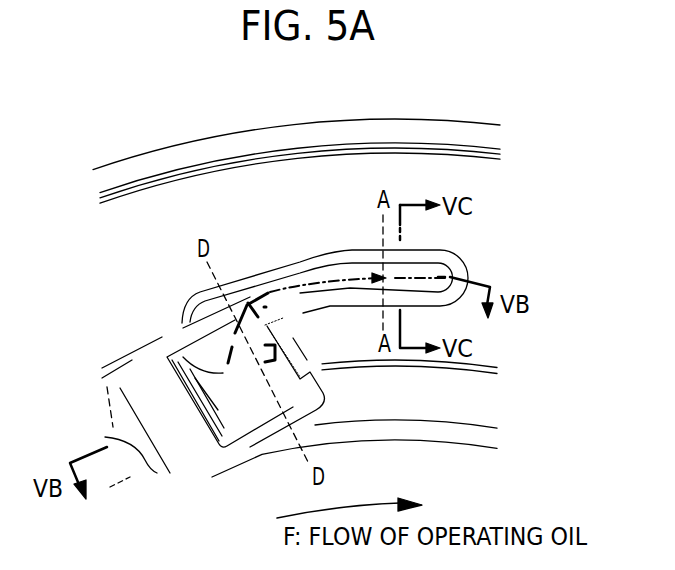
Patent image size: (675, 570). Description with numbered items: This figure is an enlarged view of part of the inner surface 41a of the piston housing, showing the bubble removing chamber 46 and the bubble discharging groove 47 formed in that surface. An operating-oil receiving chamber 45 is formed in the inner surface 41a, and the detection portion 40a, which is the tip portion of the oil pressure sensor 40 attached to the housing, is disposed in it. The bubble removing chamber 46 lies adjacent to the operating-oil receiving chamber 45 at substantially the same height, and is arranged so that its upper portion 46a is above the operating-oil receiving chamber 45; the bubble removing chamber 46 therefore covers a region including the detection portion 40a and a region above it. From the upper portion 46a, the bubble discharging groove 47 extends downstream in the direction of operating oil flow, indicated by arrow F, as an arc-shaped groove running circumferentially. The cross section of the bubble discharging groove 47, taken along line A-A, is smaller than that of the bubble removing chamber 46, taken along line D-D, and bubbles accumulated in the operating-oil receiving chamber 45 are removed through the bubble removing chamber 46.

The oil pressure sensor 40 is at (296, 125).
The detection portion 40a is at (275, 333).
The bubble discharging groove 47 is at (309, 262).
The upper portion of the bubble removing chamber 46a is at (215, 320).
The operating-oil receiving chamber 45 is at (197, 369).
The bubble removing chamber 46 is at (235, 392).
The inner surface 41a is at (457, 315).